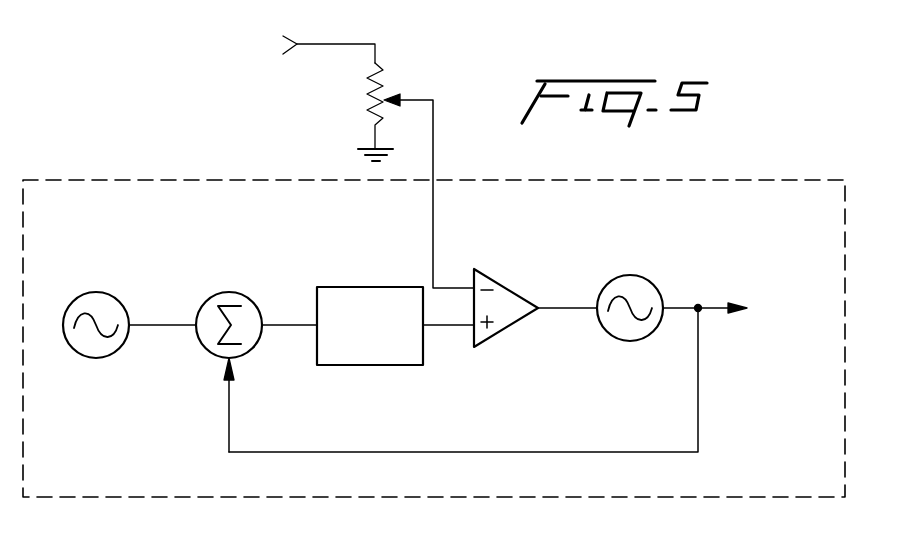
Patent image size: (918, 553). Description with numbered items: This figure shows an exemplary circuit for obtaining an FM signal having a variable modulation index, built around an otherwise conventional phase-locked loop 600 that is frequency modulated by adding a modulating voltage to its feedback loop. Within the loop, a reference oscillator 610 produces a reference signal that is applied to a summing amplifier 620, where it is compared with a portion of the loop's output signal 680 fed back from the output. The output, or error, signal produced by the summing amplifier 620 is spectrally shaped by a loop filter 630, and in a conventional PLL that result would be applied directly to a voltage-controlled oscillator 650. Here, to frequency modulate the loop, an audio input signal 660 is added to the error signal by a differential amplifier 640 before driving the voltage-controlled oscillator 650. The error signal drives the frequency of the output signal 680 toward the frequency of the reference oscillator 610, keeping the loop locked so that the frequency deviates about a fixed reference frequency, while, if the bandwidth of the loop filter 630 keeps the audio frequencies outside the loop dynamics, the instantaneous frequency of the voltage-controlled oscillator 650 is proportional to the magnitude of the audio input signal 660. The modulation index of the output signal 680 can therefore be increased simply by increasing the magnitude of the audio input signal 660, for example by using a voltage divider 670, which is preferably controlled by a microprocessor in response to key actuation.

The phase-locked loop 600 is at (92, 222).
The reference oscillator 610 is at (97, 291).
The summing amplifier 620 is at (229, 291).
The loop filter 630 is at (365, 366).
The differential amplifier 640 is at (500, 281).
The voltage-controlled oscillator 650 is at (631, 274).
The audio input signal 660 is at (291, 40).
The voltage divider 670 is at (382, 80).
The output signal 680 is at (718, 300).